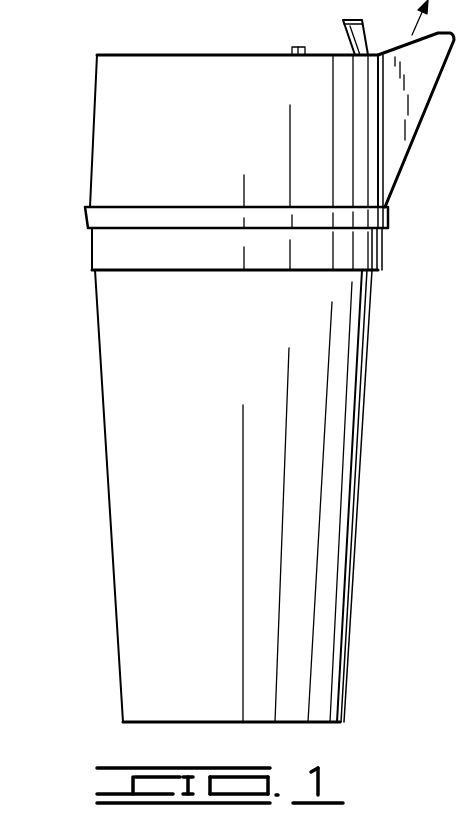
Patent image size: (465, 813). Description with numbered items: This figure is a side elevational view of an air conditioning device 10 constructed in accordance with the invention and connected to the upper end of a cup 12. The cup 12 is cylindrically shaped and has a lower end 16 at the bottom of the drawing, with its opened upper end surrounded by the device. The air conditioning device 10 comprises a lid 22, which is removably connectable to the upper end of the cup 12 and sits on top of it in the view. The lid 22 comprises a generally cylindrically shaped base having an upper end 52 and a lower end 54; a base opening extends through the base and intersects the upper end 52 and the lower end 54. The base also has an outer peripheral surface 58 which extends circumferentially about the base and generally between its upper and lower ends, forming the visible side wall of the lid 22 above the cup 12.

The air conditioning device 10 is at (241, 147).
The cup 12 is at (257, 511).
The lower end 16 is at (212, 722).
The lid 22 is at (241, 145).
The upper end 52 is at (162, 55).
The lower end 54 is at (135, 228).
The outer peripheral surface 58 is at (95, 112).